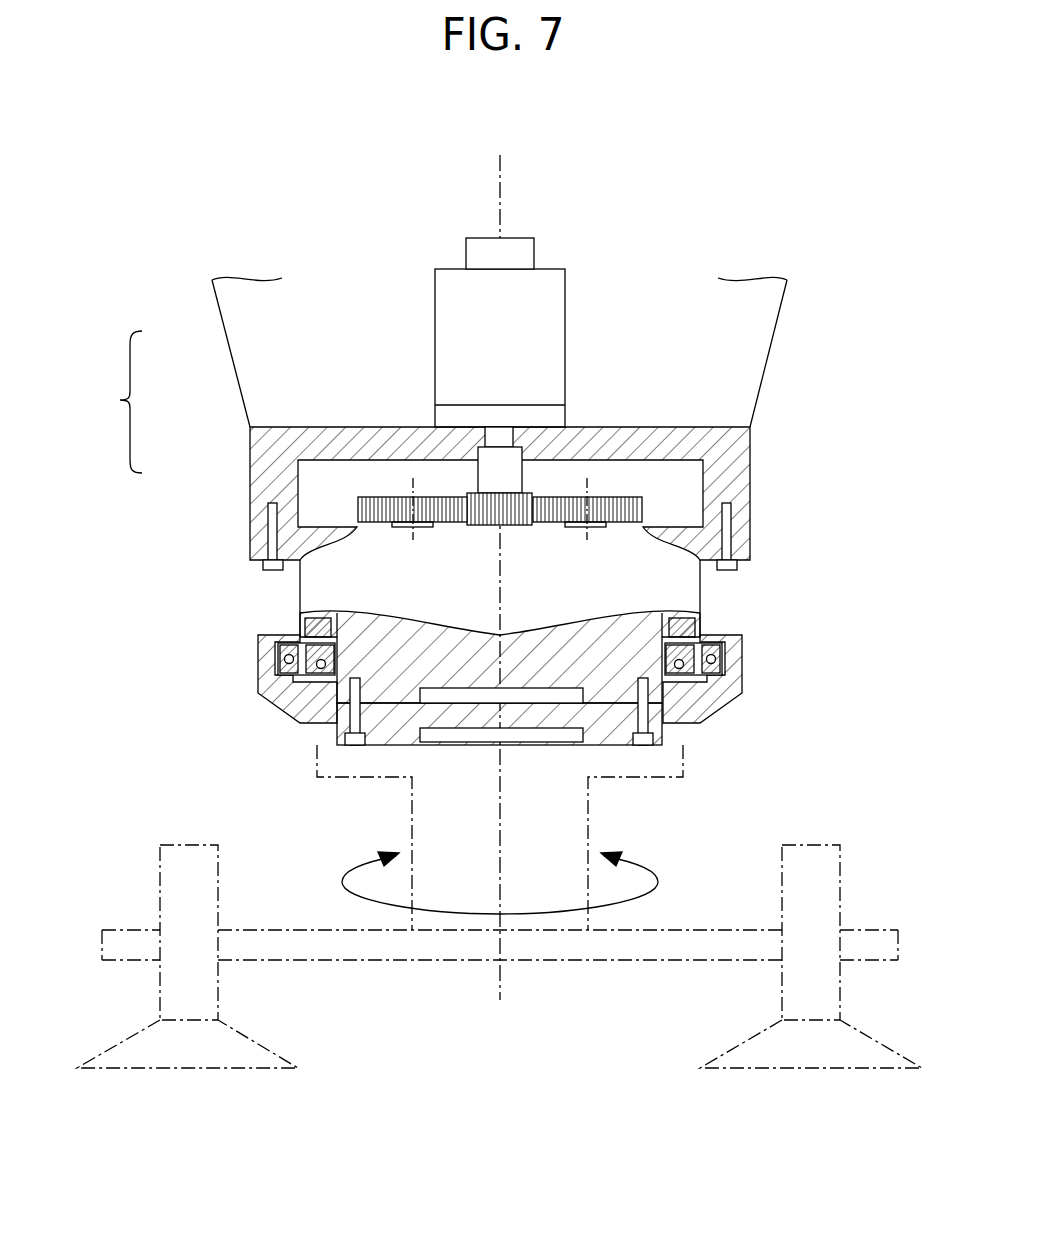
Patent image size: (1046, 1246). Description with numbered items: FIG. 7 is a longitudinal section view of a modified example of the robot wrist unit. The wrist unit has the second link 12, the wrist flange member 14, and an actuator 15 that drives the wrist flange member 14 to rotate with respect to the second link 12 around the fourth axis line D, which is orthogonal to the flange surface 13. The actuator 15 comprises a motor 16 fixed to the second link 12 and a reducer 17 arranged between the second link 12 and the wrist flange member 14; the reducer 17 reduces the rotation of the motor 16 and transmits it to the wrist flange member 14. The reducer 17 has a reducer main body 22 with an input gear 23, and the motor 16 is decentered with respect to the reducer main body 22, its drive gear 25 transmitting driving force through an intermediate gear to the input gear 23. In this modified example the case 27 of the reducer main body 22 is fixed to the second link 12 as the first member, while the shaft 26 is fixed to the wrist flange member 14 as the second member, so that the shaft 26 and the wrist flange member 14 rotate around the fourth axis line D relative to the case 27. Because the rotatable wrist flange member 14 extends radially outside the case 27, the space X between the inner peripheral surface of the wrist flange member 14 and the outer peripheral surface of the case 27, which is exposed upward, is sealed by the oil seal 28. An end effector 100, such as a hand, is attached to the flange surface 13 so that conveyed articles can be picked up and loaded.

The second link 12 is at (778, 342).
The flange surface 13 is at (448, 747).
The wrist flange member 14 is at (392, 746).
The actuator 15 is at (111, 402).
The motor 16 is at (435, 338).
The reducer 17 is at (234, 503).
The reducer main body 22 is at (298, 593).
The input gear 23 is at (380, 497).
The drive gear 25 is at (490, 530).
The shaft 26 is at (605, 745).
The case 27 is at (702, 597).
The oil seal 28 is at (706, 648).
The end effector 100 is at (538, 958).
The fourth axis line D is at (502, 826).
The space X is at (682, 612).